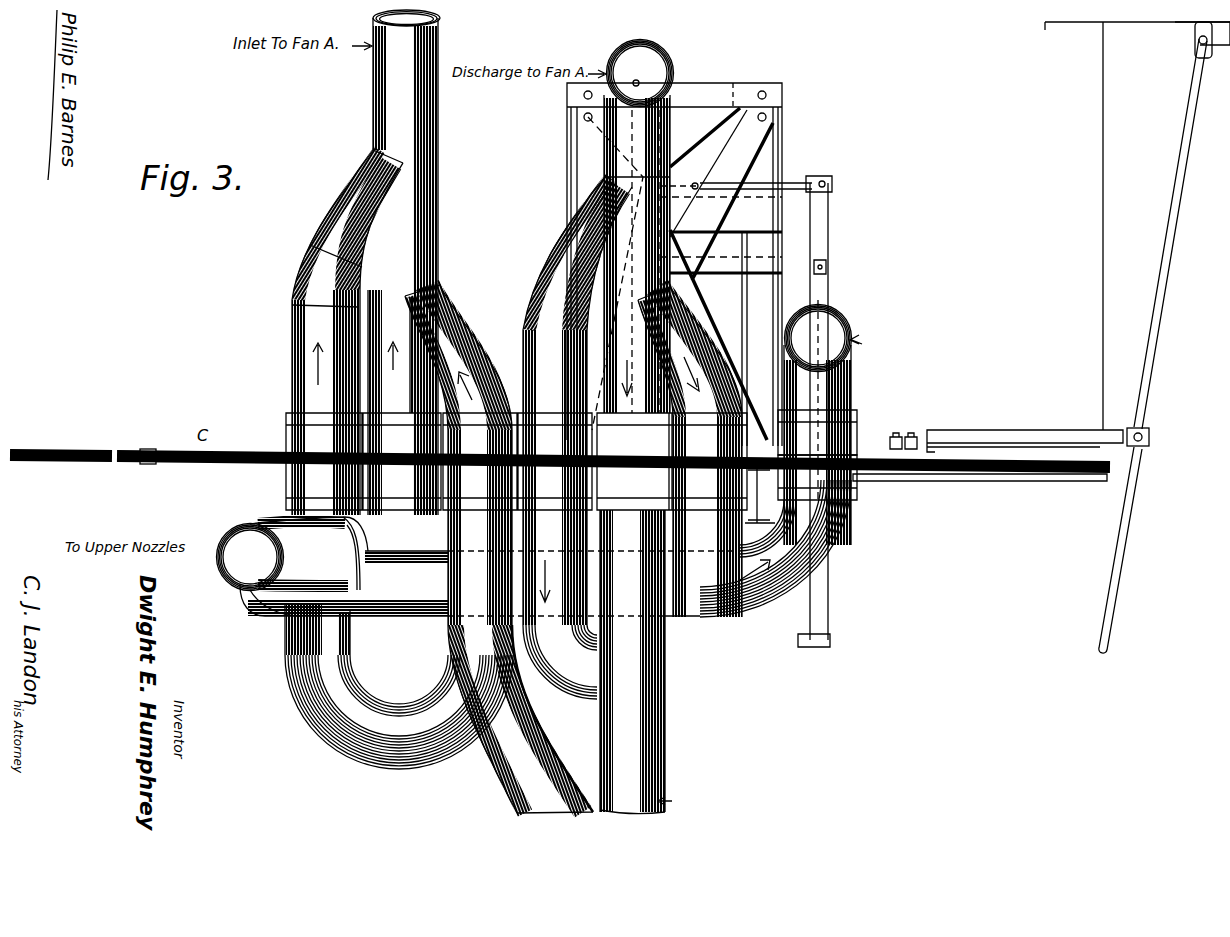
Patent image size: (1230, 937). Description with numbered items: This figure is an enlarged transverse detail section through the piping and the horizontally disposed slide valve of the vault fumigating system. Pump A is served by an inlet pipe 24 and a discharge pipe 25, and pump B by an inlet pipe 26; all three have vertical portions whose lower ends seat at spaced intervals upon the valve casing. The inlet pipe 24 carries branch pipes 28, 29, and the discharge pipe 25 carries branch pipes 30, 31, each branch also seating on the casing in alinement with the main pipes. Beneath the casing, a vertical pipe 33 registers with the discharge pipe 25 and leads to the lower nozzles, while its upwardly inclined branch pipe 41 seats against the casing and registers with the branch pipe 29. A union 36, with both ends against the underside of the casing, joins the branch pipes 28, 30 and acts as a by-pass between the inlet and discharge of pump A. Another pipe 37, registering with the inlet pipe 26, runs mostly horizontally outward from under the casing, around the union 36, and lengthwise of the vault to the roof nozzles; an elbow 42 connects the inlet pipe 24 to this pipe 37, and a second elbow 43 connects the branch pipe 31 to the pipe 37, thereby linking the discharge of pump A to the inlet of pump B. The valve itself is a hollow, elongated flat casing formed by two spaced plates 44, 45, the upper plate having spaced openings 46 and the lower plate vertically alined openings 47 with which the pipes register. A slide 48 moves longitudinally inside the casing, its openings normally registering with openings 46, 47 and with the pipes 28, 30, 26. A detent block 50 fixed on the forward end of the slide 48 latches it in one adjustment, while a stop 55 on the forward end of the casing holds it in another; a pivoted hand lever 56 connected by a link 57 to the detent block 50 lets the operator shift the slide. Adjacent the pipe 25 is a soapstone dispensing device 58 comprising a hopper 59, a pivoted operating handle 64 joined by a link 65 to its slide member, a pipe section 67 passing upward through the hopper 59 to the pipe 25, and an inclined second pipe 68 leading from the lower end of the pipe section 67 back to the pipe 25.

The inlet pipe 24 is at (373, 106).
The discharge pipe 25 is at (604, 165).
The inlet pipe 26 is at (856, 386).
The branch pipe 28 is at (292, 338).
The branch pipe 29 is at (462, 343).
The branch pipe 30 is at (560, 290).
The branch pipe 31 is at (693, 327).
The vertical pipe 33 is at (667, 680).
The union 36 is at (395, 690).
The pipe 37 is at (822, 604).
The inclined branch pipe 41 is at (553, 747).
The elbow 42 is at (307, 533).
The second elbow 43 is at (708, 540).
The plate 44 is at (93, 442).
The plate 45 is at (97, 462).
The openings 46 is at (857, 447).
The openings 47 is at (850, 490).
The slide 48 is at (153, 443).
The detent block 50 is at (912, 440).
The stop 55 is at (1120, 462).
The hand lever 56 is at (1160, 326).
The link 57 is at (995, 431).
The soapstone dispensing device 58 is at (790, 122).
The hopper 59 is at (695, 113).
The operating handle 64 is at (832, 216).
The link 65 is at (803, 182).
The pipe section 67 is at (645, 58).
The second pipe 68 is at (615, 273).